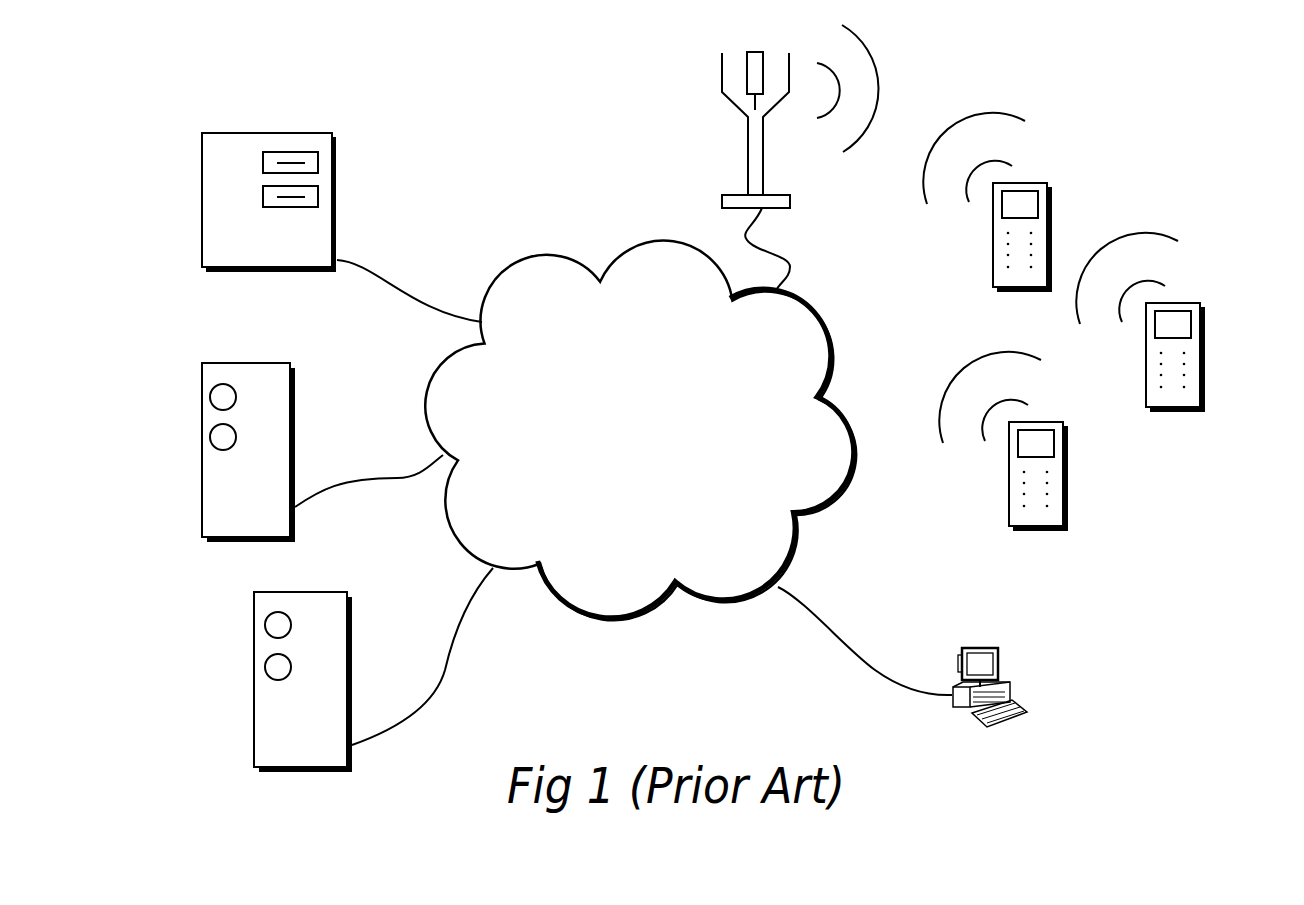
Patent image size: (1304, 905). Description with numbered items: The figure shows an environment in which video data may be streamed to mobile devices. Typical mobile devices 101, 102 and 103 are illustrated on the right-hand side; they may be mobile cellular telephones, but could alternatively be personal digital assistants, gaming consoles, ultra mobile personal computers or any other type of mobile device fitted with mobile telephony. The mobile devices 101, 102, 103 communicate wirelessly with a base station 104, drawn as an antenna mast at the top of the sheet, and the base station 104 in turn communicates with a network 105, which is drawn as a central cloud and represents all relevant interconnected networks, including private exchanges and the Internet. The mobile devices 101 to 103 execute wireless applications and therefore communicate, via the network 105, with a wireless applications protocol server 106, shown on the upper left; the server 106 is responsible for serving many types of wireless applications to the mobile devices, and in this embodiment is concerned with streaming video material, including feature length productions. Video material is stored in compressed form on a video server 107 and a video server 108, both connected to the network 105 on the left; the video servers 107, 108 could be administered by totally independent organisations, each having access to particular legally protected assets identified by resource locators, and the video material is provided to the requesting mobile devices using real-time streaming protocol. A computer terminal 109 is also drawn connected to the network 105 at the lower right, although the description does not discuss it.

The mobile device 101 is at (1003, 278).
The mobile device 102 is at (1192, 392).
The mobile device 103 is at (1053, 511).
The base station 104 is at (750, 173).
The network 105 is at (668, 449).
The wireless applications protocol (WAP) server 106 is at (323, 242).
The video server 107 is at (278, 418).
The video server 108 is at (332, 650).
The computer terminal 109 is at (1022, 708).